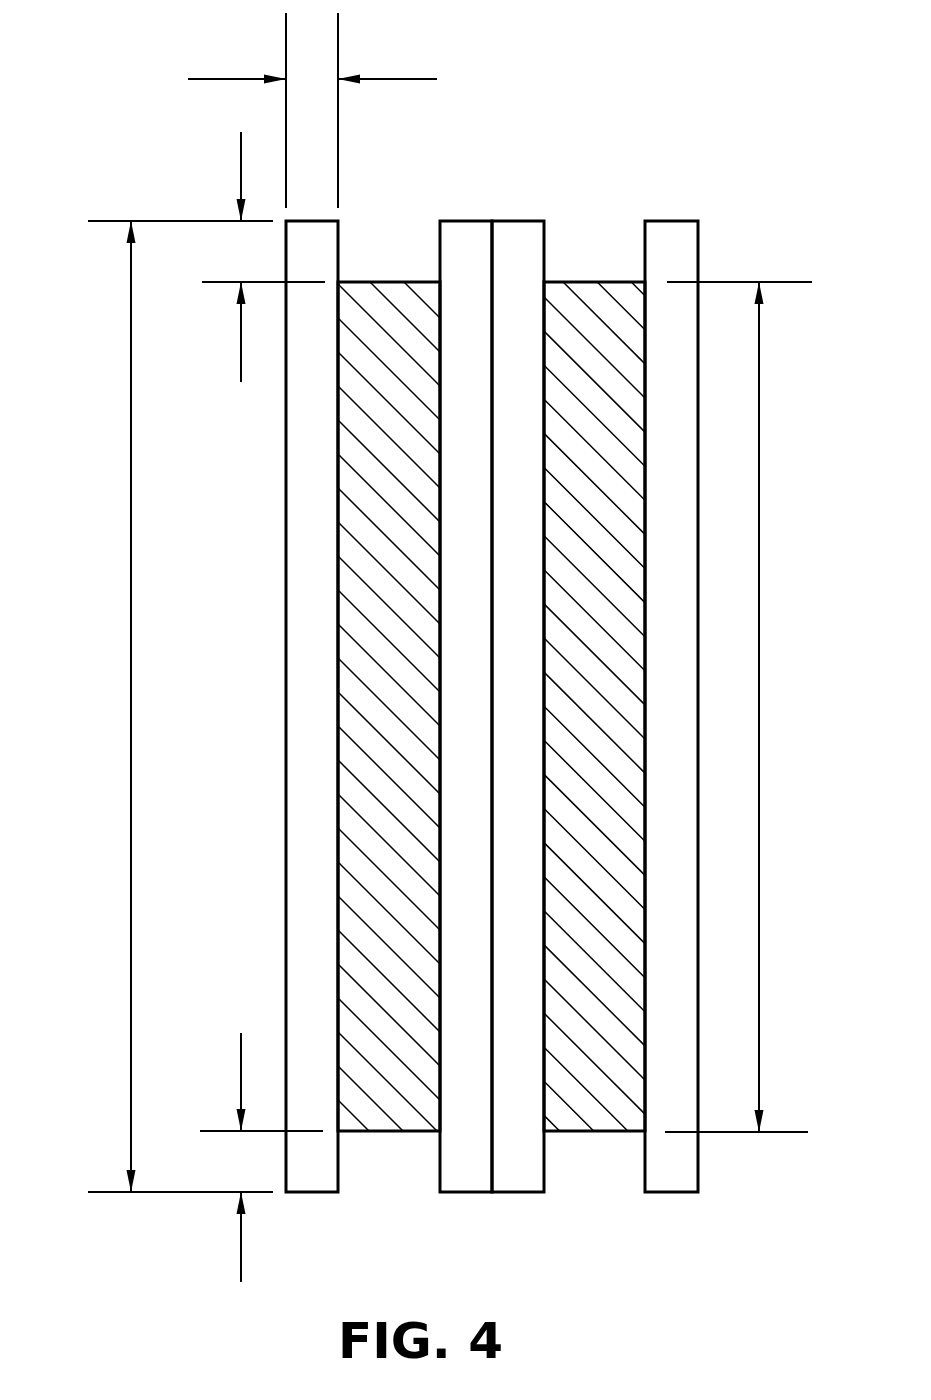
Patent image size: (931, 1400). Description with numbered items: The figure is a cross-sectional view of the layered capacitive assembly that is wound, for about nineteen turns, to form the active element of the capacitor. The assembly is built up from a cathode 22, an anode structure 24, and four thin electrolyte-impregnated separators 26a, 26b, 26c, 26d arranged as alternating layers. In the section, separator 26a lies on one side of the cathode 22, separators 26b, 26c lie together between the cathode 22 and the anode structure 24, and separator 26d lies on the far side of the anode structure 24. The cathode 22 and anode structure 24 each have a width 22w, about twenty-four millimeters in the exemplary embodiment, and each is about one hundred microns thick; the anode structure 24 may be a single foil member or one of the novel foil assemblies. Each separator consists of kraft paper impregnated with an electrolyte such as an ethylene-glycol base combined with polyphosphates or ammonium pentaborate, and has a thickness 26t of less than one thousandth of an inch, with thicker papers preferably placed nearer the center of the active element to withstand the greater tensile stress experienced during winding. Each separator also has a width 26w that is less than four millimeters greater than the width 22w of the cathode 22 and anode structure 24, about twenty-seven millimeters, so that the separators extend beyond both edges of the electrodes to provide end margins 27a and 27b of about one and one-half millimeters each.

The cathode 22 is at (389, 280).
The anode structure 24 is at (594, 279).
The electrolyte-impregnated separator 26a is at (312, 1194).
The electrolyte-impregnated separator 26b is at (462, 1194).
The electrolyte-impregnated separator 26c is at (518, 1194).
The electrolyte-impregnated separator 26d is at (672, 1194).
The separator thickness 26t is at (405, 79).
The separator width 26w is at (130, 705).
The cathode and anode width 22w is at (760, 708).
The end margin 27a is at (241, 1250).
The end margin 27b is at (241, 156).